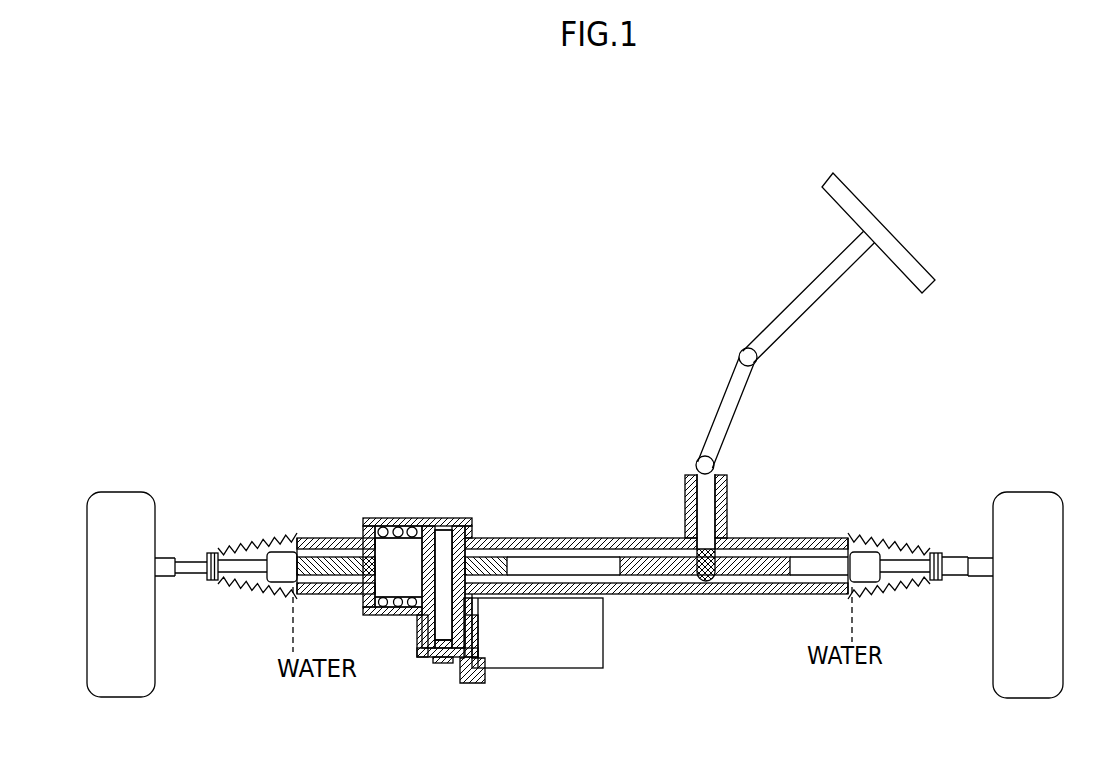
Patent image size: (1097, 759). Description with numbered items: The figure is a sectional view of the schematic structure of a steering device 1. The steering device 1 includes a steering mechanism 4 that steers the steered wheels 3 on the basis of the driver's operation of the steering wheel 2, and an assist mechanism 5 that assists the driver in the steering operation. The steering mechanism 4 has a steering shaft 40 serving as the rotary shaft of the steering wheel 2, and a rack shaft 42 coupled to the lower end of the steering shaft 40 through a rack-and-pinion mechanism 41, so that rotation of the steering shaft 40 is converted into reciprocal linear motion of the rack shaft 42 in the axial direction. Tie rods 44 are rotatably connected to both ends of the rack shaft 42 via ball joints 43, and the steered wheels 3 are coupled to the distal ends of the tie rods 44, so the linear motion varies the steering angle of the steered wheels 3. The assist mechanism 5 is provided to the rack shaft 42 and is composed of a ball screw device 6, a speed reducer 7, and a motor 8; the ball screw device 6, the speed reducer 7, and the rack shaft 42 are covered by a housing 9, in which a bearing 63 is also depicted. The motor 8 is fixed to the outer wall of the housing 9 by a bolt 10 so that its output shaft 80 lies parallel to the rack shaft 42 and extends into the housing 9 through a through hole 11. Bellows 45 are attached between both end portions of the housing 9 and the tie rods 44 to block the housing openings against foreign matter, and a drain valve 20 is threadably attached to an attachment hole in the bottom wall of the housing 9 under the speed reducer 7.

The steering device 1 is at (577, 282).
The steering wheel 2 is at (862, 194).
The steered wheels 3 is at (120, 492).
The steering mechanism 4 is at (704, 358).
The steering shaft 40 is at (726, 390).
The rack-and-pinion mechanism 41 is at (710, 596).
The rack shaft 42 is at (628, 595).
The ball joints 43 is at (267, 586).
The tie rods 44 is at (205, 581).
The bellows 45 is at (273, 537).
The assist mechanism 5 is at (484, 515).
The ball screw device 6 is at (366, 595).
The bearing 63 is at (383, 518).
The speed reducer 7 is at (425, 610).
The motor 8 is at (540, 670).
The housing 9 is at (440, 518).
The bolt 10 is at (487, 684).
The through hole 11 is at (479, 620).
The drain valve 20 is at (442, 664).
The output shaft 80 is at (479, 644).